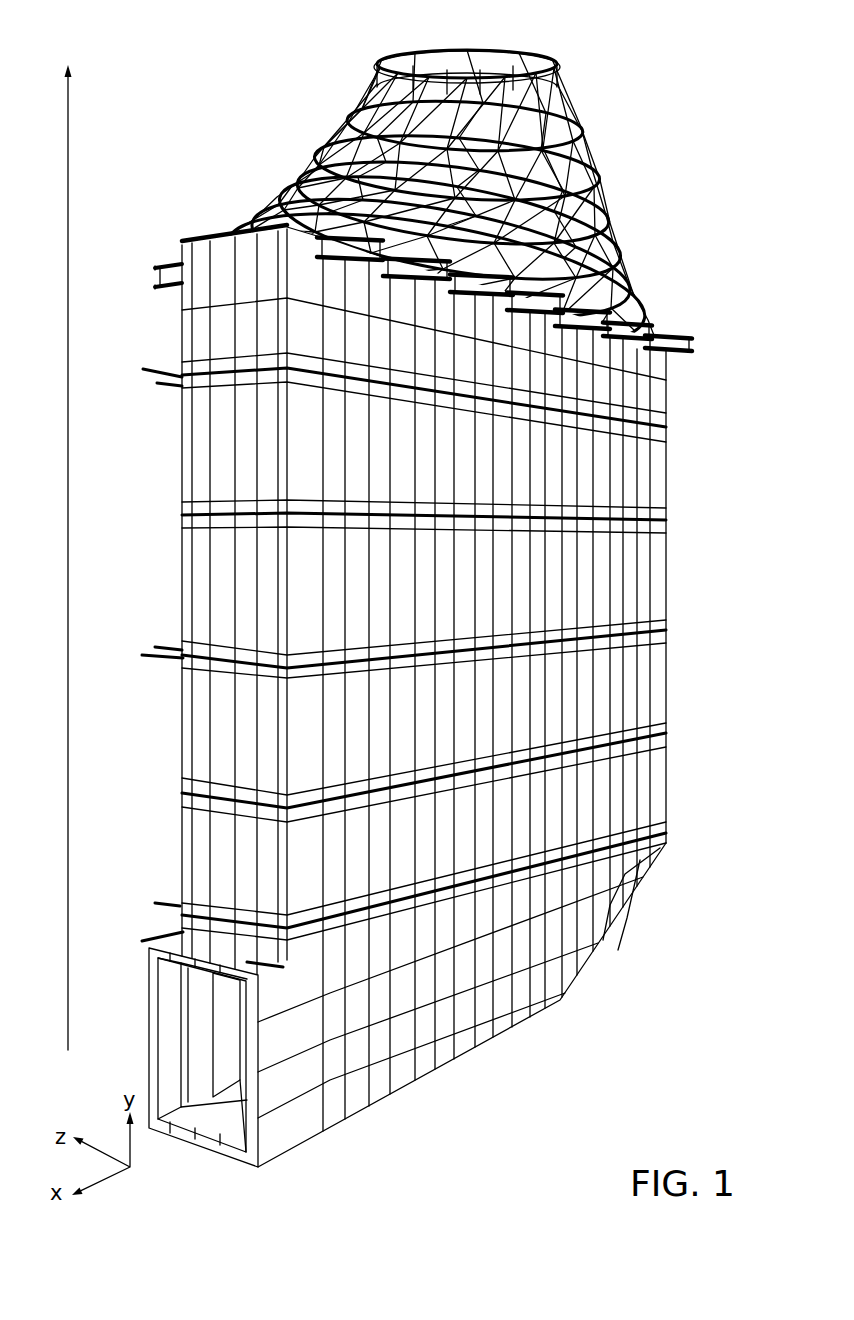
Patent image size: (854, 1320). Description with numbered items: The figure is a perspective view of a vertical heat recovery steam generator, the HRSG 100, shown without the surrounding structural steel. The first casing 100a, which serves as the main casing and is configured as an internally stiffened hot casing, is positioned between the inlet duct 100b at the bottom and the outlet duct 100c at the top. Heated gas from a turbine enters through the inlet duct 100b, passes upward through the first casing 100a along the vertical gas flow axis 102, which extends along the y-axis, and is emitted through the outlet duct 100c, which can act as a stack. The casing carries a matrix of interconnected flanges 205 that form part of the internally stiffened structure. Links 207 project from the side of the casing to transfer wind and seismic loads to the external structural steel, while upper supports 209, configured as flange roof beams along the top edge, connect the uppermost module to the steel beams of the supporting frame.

The vertical HRSG 100 is at (703, 351).
The first casing 100a is at (601, 589).
The inlet duct 100b is at (503, 980).
The outlet duct 100c is at (548, 180).
The gas flow axis 102 is at (68, 575).
The interconnected flanges 205 is at (640, 428).
The links 207 is at (158, 384).
The upper supports 209 is at (618, 278).